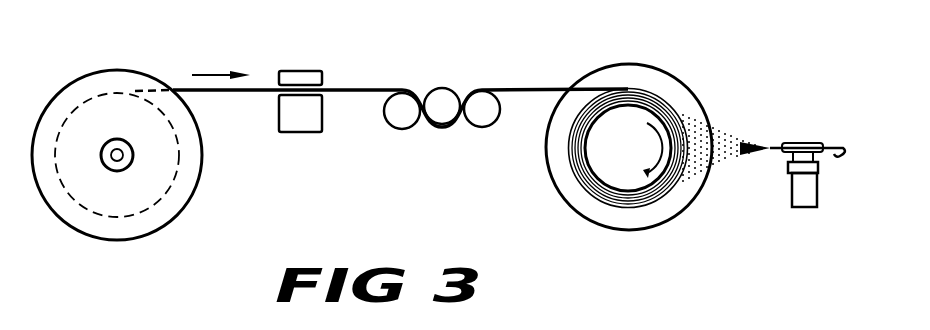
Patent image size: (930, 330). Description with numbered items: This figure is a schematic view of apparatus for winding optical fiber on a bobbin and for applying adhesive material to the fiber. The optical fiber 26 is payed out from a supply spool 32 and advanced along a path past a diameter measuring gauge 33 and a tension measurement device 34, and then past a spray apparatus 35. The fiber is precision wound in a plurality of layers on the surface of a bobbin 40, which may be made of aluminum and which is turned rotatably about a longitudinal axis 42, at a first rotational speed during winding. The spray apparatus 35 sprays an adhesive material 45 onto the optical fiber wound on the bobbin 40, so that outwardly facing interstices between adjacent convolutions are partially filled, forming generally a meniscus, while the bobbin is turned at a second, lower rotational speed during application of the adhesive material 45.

The supply spool 32 is at (113, 70).
The optical fiber 26 is at (212, 93).
The diameter measuring gauge 33 is at (298, 70).
The tension measurement device 34 is at (441, 84).
The bobbin 40 is at (626, 62).
The longitudinal axis 42 is at (627, 158).
The adhesive material 45 is at (729, 134).
The spray apparatus 35 is at (774, 186).